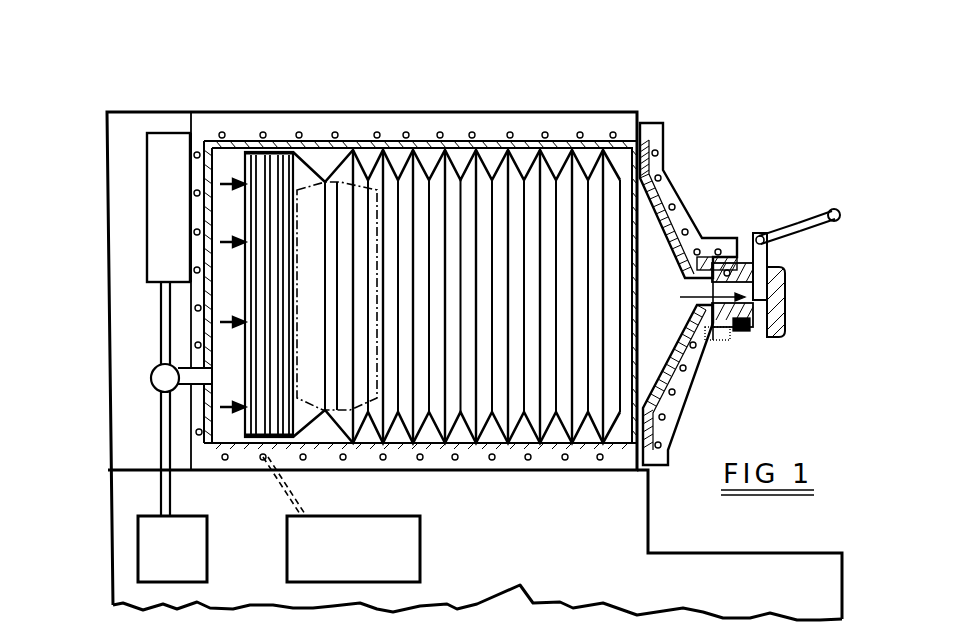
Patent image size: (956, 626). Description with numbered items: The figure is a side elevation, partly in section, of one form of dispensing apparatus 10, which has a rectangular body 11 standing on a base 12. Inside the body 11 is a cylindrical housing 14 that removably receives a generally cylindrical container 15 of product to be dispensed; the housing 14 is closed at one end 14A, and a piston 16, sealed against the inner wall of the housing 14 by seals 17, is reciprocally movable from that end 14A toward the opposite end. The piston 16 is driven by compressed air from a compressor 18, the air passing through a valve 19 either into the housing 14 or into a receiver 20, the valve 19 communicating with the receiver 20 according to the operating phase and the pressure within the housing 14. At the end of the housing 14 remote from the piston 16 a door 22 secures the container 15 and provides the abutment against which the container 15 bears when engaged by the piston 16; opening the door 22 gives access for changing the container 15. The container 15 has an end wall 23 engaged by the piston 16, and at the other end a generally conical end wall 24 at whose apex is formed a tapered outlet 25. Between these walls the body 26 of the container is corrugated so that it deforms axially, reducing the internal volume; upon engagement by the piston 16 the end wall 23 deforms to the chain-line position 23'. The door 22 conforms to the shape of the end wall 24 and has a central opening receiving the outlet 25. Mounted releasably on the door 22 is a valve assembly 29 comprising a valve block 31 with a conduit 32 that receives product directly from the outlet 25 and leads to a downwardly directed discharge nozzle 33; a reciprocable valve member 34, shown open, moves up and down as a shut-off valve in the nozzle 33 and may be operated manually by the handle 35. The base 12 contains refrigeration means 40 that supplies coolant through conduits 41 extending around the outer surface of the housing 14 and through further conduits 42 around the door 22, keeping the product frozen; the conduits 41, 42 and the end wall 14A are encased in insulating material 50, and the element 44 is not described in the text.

The dispensing apparatus 10 is at (100, 101).
The rectangular body 11 is at (166, 112).
The base 12 is at (112, 592).
The cylindrical housing 14 is at (394, 141).
The closed end of housing 14A is at (204, 170).
The container 15 is at (456, 143).
The piston 16 is at (258, 148).
The seals 17 is at (281, 149).
The compressor 18 is at (155, 525).
The valve 19 is at (151, 374).
The receiver 20 is at (146, 235).
The door 22 is at (688, 190).
The end wall 23 is at (300, 463).
The deformed end wall position 23' is at (363, 345).
The conical end wall 24 is at (667, 362).
The outlet 25 is at (712, 312).
The container body 26 is at (456, 447).
The valve assembly 29 is at (774, 227).
The valve block 31 is at (782, 288).
The conduit 32 is at (738, 340).
The discharge nozzle 33 is at (760, 340).
The valve member 34 is at (787, 307).
The handle 35 is at (808, 228).
The refrigeration means 40 is at (421, 557).
The conduits 41 is at (549, 464).
The further conduits 42 is at (661, 414).
The support shelf 44 is at (773, 553).
The insulating material 50 is at (200, 417).